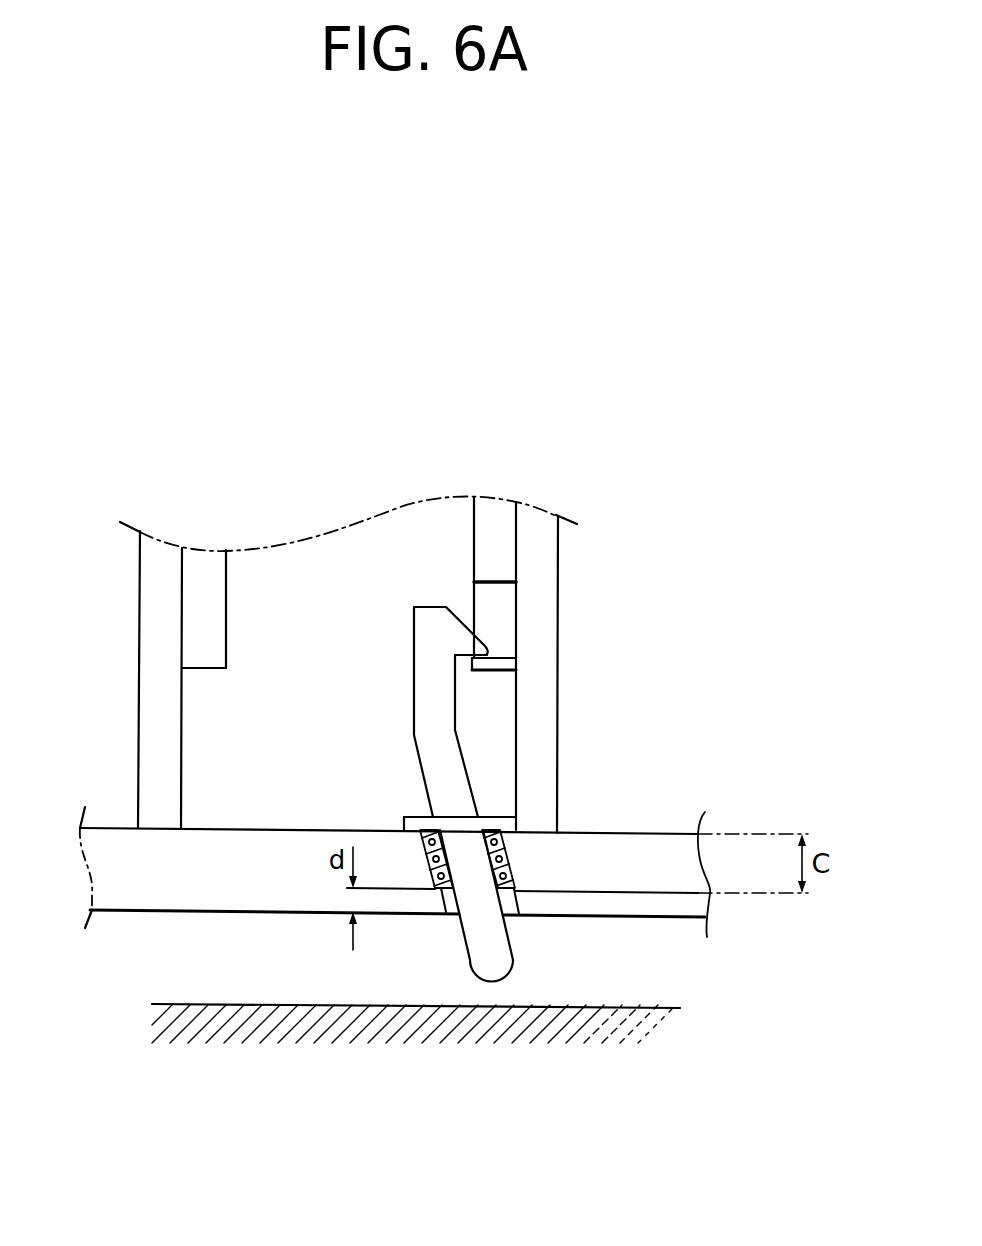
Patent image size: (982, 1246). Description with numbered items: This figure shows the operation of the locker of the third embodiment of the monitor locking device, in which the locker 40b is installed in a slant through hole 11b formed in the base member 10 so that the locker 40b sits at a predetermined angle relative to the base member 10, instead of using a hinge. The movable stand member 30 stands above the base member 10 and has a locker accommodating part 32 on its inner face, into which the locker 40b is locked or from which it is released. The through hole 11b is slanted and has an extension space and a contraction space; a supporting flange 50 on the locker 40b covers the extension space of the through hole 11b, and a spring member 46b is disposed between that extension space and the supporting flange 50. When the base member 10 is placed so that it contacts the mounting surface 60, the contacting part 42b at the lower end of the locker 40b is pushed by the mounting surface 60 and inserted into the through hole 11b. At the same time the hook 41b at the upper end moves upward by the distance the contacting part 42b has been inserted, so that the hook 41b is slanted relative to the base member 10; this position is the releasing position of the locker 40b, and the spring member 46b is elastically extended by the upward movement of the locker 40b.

The base member 10 is at (670, 852).
The through hole 11b is at (445, 888).
The movable stand member 30 is at (502, 547).
The locker accommodating part 32 is at (508, 602).
The locker 40b is at (393, 668).
The hook 41b is at (481, 646).
The contacting part 42b is at (497, 976).
The spring member 46b is at (516, 876).
The supporting flange 50 is at (405, 816).
The mounting surface 60 is at (277, 1042).